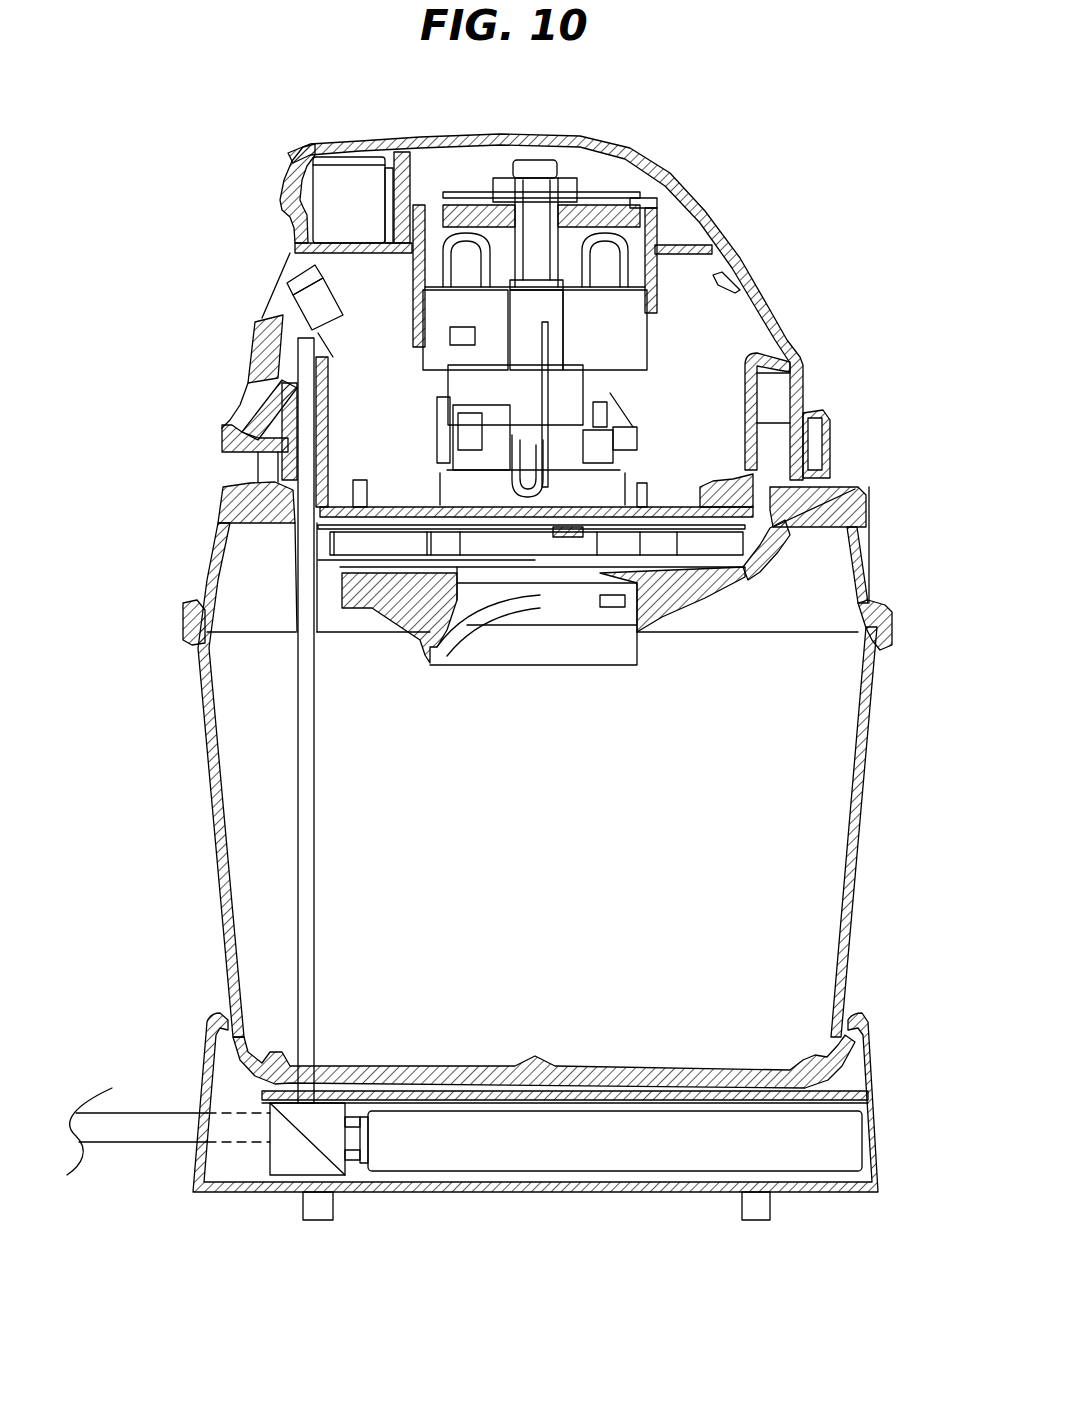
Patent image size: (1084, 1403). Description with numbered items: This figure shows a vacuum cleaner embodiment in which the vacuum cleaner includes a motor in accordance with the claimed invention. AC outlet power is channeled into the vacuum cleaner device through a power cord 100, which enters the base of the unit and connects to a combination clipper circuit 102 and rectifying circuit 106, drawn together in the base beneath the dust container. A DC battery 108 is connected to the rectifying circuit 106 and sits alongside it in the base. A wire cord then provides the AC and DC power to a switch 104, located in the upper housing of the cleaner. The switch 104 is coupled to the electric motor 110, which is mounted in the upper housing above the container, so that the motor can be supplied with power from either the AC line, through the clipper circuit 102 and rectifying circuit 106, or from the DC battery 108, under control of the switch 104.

The power cord 100 is at (127, 1133).
The clipper circuit 102 is at (280, 1160).
The switch 104 is at (270, 313).
The rectifying circuit 106 is at (345, 1132).
The DC battery 108 is at (636, 1140).
The electric motor 110 is at (663, 234).